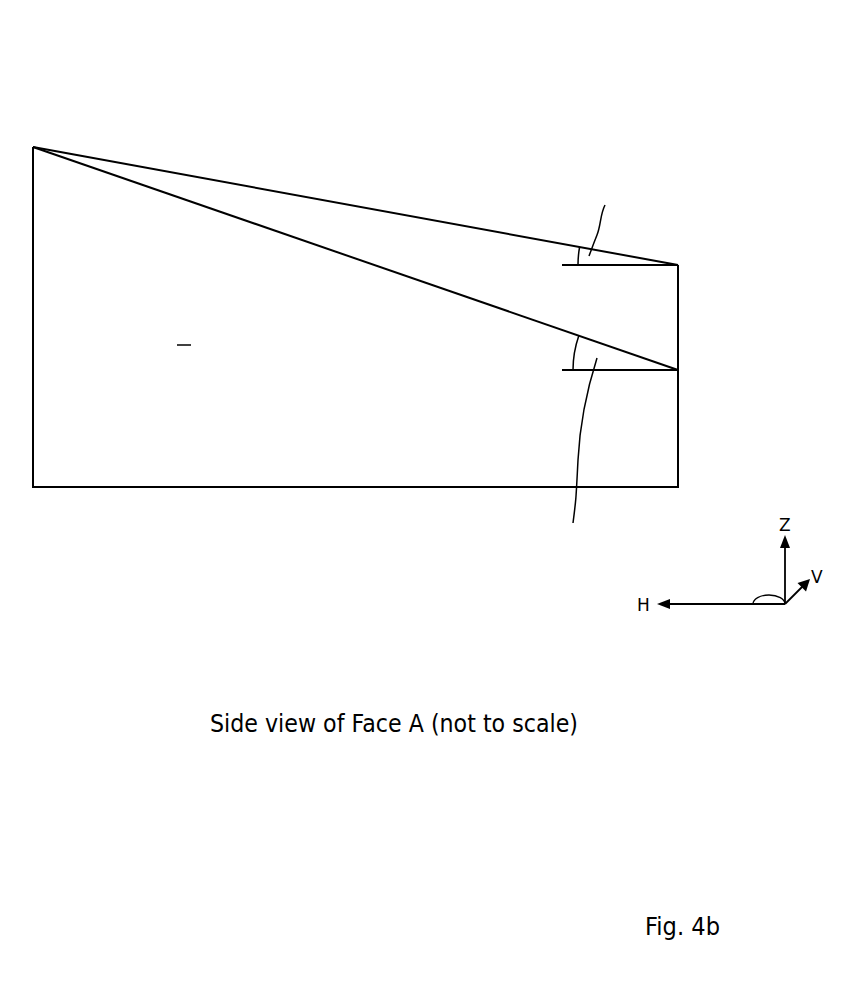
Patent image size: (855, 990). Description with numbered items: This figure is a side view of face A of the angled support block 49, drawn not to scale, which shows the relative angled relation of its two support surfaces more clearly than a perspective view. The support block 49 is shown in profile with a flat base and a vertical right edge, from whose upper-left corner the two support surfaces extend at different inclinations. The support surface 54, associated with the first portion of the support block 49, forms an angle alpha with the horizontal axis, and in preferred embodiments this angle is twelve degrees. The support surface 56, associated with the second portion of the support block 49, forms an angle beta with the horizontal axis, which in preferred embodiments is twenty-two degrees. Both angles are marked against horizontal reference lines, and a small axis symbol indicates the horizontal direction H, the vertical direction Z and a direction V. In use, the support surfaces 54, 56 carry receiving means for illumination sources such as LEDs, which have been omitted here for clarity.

The support block 49 is at (355, 303).
The support surface 54 is at (333, 202).
The support surface 56 is at (190, 201).